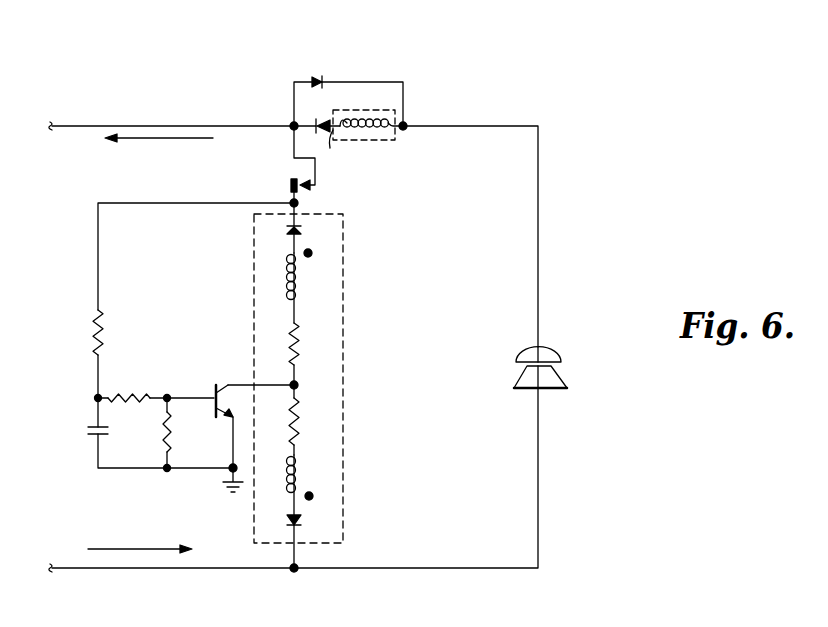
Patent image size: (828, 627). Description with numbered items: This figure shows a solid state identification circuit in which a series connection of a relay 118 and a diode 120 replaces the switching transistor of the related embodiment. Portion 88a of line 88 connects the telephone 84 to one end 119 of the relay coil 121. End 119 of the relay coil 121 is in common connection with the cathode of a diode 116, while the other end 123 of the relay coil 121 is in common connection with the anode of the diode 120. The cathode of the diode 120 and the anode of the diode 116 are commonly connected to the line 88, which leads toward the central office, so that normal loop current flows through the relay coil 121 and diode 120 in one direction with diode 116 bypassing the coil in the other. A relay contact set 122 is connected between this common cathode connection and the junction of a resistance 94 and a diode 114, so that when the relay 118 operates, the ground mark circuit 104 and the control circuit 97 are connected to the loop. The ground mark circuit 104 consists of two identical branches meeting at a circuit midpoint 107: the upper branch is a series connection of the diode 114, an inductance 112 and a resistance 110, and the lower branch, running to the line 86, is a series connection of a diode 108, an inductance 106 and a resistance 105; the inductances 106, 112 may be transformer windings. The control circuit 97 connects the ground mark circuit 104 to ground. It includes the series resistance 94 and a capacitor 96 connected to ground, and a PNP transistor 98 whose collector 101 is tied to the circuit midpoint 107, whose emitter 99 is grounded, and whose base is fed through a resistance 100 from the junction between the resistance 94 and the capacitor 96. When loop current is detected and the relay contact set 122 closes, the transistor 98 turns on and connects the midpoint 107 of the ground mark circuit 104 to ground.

The telephone 84 is at (565, 369).
The line 86 is at (454, 570).
The line 88 is at (210, 125).
The portion of line 88a is at (488, 126).
The resistance 94 is at (104, 333).
The capacitor 96 is at (88, 430).
The control circuit 97 is at (212, 407).
The PNP transistor 98 is at (210, 395).
The emitter 99 is at (231, 414).
The resistance 100 is at (131, 393).
The collector 101 is at (220, 384).
The ground mark circuit 104 is at (345, 298).
The resistance 105 is at (299, 420).
The inductance 106 is at (301, 472).
The circuit midpoint 107 is at (301, 386).
The diode 108 is at (300, 524).
The resistance 110 is at (299, 345).
The inductance 112 is at (299, 287).
The diode 114 is at (302, 232).
The diode 116 is at (317, 76).
The relay 118 is at (376, 142).
The end of relay coil 119 is at (406, 124).
The diode 120 is at (318, 120).
The relay coil 121 is at (365, 120).
The relay contact set 122 is at (290, 177).
The end of relay coil 123 is at (336, 149).